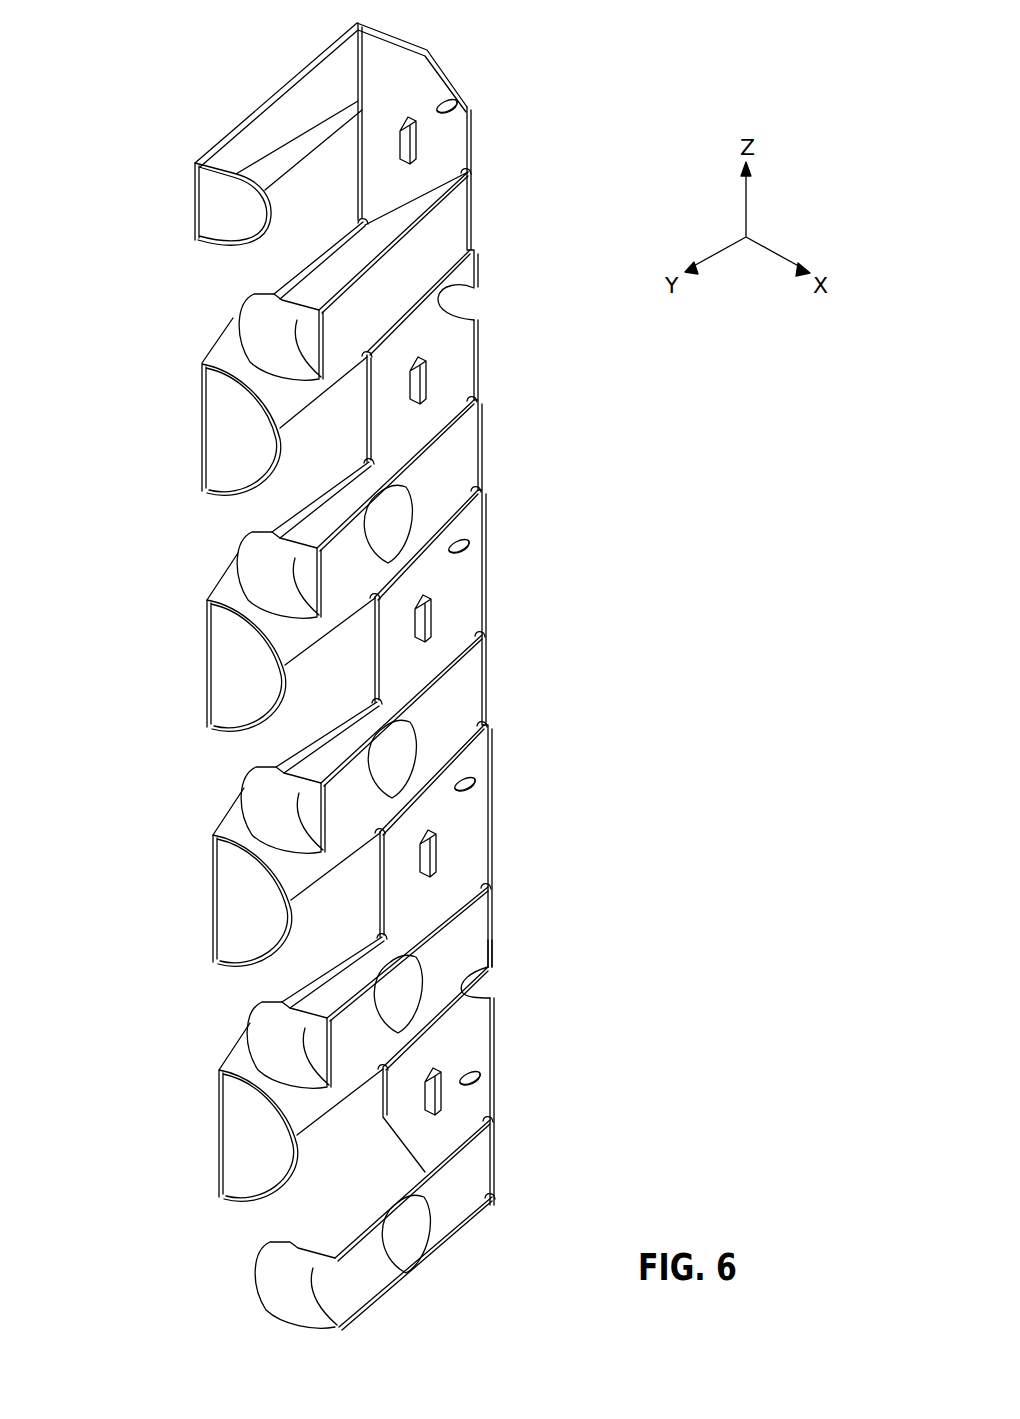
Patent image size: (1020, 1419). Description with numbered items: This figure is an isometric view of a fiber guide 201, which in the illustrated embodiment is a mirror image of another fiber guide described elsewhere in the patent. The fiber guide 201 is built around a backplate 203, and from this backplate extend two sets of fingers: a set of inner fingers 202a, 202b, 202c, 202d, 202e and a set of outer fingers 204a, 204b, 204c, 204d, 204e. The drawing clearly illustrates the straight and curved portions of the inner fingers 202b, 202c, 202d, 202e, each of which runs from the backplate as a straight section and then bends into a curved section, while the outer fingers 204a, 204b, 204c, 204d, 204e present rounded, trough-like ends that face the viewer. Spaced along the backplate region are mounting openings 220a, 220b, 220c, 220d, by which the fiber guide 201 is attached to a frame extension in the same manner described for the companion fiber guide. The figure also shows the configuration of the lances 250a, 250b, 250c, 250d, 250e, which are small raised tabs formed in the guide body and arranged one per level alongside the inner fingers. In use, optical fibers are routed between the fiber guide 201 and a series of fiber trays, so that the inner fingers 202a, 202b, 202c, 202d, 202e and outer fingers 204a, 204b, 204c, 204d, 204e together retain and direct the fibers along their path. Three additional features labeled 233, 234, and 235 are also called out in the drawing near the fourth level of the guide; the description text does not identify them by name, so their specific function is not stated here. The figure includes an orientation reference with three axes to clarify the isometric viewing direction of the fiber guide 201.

The fiber guide 201 is at (236, 34).
The backplate 203 is at (402, 54).
The outer finger 204a is at (215, 207).
The outer finger 204b is at (220, 425).
The outer finger 204c is at (225, 668).
The outer finger 204d is at (228, 903).
The outer finger 204e is at (232, 1128).
The inner finger 202a is at (455, 218).
The inner finger 202b is at (470, 456).
The inner finger 202c is at (470, 706).
The inner finger 202d is at (484, 892).
The inner finger 202e is at (488, 1172).
The lance 250a is at (418, 142).
The lance 250b is at (428, 378).
The lance 250c is at (432, 615).
The lance 250d is at (437, 851).
The lance 250e is at (442, 1086).
The mounting opening 220a is at (455, 108).
The mounting opening 220b is at (472, 545).
The mounting opening 220c is at (477, 780).
The mounting opening 220d is at (477, 1078).
The flange 233 is at (472, 950).
The notch 234 is at (474, 999).
The trough 235 is at (275, 1017).